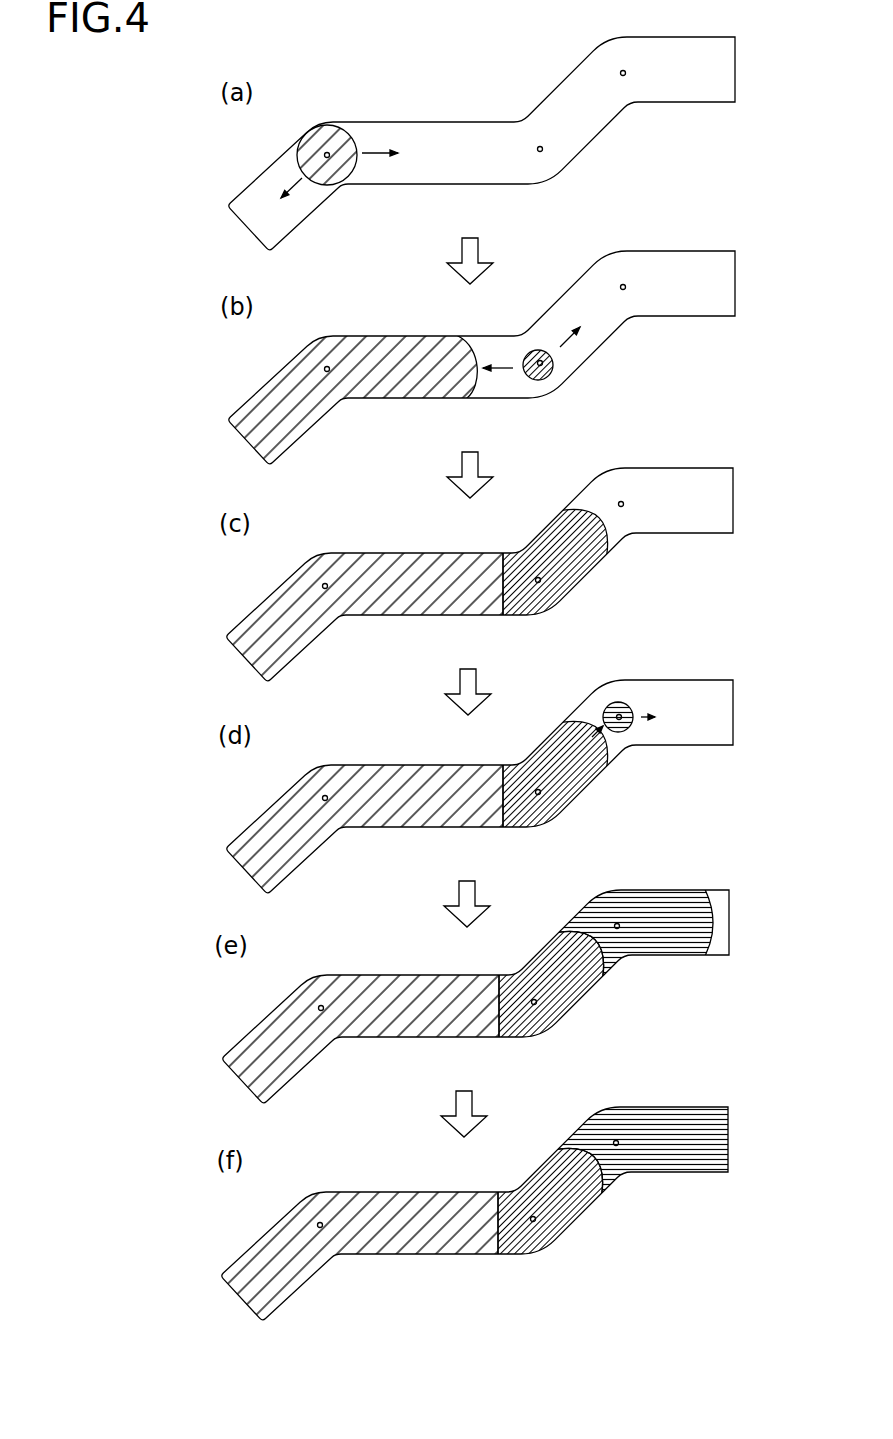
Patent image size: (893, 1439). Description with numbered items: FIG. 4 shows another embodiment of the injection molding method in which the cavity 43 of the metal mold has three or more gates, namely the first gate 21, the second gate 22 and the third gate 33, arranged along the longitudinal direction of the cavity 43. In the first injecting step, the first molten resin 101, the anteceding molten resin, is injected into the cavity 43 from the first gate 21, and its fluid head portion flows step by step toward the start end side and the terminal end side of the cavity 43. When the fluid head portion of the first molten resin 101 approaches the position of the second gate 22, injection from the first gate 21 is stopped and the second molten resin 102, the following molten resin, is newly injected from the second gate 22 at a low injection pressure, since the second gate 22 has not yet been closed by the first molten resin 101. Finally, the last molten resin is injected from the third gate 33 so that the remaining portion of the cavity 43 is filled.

The cavity 43 is at (478, 678).
The first gate 21 is at (355, 723).
The second gate 22 is at (548, 726).
The third gate 33 is at (647, 642).
The first molten resin 101 is at (323, 733).
The second molten resin 102 is at (548, 827).